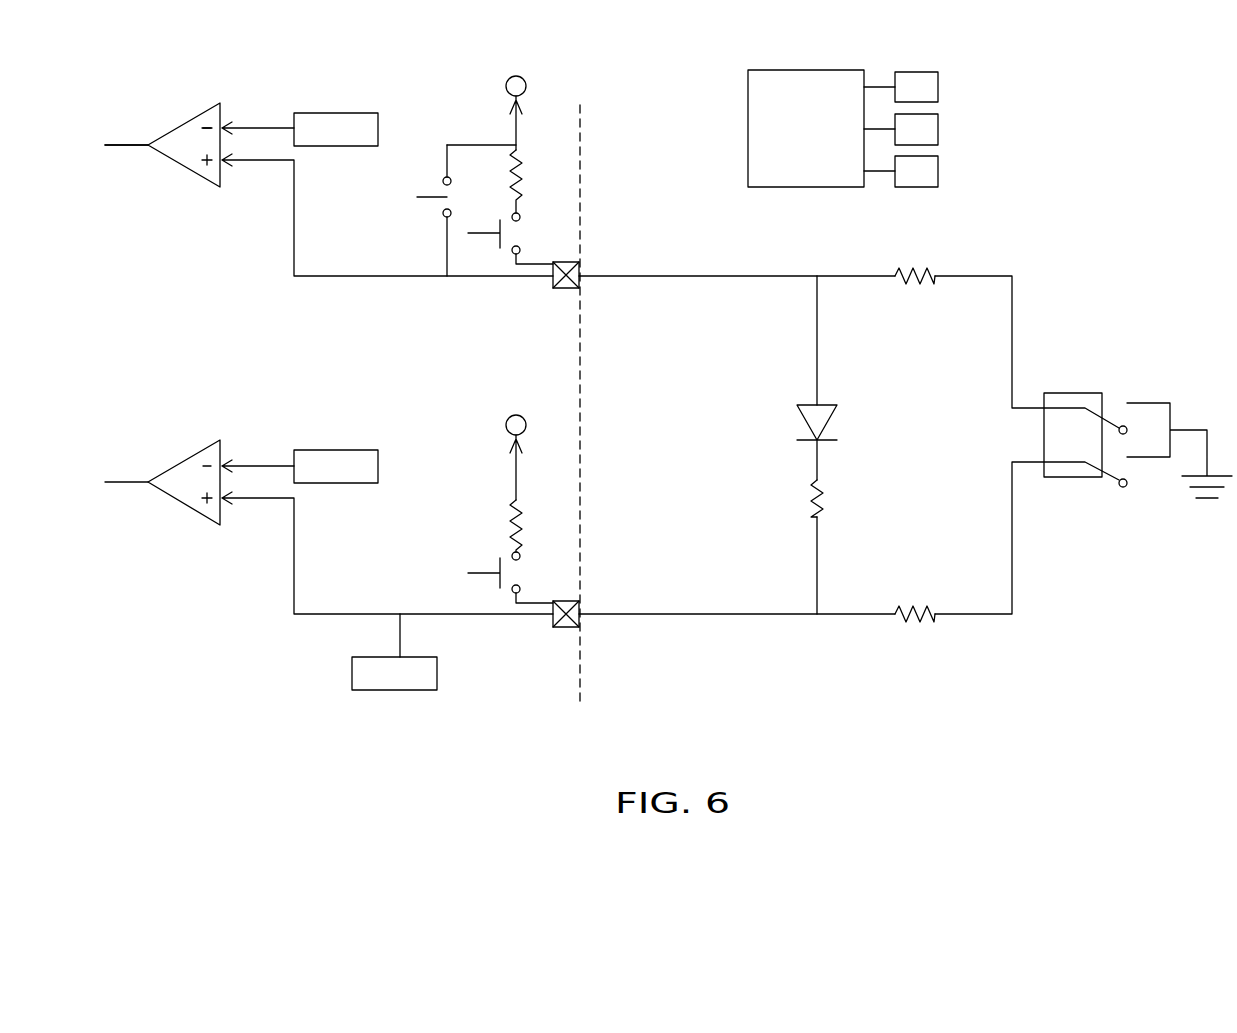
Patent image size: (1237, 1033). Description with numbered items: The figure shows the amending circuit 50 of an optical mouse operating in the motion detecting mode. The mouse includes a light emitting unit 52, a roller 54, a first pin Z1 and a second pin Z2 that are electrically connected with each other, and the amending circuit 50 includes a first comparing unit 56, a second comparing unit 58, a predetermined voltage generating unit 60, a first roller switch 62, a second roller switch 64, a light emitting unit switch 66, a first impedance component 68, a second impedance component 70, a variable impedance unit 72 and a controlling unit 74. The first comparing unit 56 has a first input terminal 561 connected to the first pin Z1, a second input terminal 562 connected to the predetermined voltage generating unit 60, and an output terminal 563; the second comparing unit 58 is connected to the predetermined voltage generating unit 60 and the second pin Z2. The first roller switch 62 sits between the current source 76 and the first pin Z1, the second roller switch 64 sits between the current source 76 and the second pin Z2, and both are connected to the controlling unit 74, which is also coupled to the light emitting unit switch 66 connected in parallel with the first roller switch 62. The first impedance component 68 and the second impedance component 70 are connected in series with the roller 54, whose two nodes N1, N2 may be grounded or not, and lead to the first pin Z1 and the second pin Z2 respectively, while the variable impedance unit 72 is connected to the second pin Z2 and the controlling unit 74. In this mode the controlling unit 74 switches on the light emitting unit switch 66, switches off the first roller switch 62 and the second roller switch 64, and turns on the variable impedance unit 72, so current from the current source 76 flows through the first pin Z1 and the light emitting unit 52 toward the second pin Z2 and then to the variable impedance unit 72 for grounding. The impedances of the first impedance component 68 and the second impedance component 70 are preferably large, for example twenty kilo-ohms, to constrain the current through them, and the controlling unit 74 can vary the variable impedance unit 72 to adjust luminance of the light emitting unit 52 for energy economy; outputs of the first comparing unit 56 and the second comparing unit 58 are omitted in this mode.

The amending circuit 50 is at (1095, 160).
The light emitting unit 52 is at (835, 418).
The roller 54 is at (1043, 437).
The first comparing unit 56 is at (174, 128).
The first input terminal 561 is at (206, 172).
The second input terminal 562 is at (208, 125).
The output terminal 563 is at (146, 150).
The second comparing unit 58 is at (174, 466).
The predetermined voltage generating unit 60 is at (350, 144).
The first roller switch 62 is at (520, 233).
The second roller switch 64 is at (520, 573).
The light emitting unit switch 66 is at (434, 186).
The first impedance component 68 is at (918, 286).
The second impedance component 70 is at (912, 625).
The variable impedance unit 72 is at (409, 688).
The controlling unit 74 is at (820, 147).
The current source 76 is at (505, 84).
The first pin Z1 is at (565, 290).
The second pin Z2 is at (565, 628).
The first node N1 is at (1122, 408).
The second node N2 is at (1122, 489).